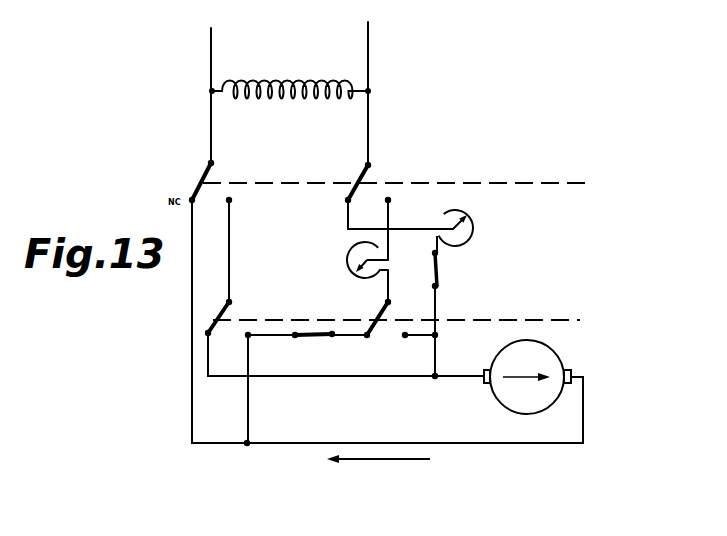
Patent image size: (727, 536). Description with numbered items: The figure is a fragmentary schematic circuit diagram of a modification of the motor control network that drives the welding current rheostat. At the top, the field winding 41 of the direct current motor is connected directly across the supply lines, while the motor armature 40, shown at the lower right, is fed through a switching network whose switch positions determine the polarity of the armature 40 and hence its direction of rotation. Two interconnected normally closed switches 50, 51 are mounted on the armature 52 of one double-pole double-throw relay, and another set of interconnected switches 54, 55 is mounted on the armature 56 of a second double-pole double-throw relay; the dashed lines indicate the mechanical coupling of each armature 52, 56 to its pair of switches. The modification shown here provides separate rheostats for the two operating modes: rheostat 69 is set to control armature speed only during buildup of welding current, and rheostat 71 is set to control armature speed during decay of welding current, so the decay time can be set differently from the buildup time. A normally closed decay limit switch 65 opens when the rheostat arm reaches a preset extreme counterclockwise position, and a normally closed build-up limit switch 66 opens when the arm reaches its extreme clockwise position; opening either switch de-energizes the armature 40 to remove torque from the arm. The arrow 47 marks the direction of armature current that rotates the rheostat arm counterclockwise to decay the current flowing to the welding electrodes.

The armature 40 is at (553, 344).
The field winding 41 is at (317, 96).
The arrow 47 is at (428, 458).
The normally closed switch 50 is at (205, 176).
The normally closed switch 51 is at (362, 178).
The armature 52 is at (499, 183).
The switch 54 is at (232, 302).
The switch 55 is at (382, 310).
The armature 56 is at (483, 320).
The decay limit switch 65 is at (440, 270).
The build-up limit switch 66 is at (316, 339).
The rheostat 69 is at (348, 268).
The rheostat 71 is at (473, 229).